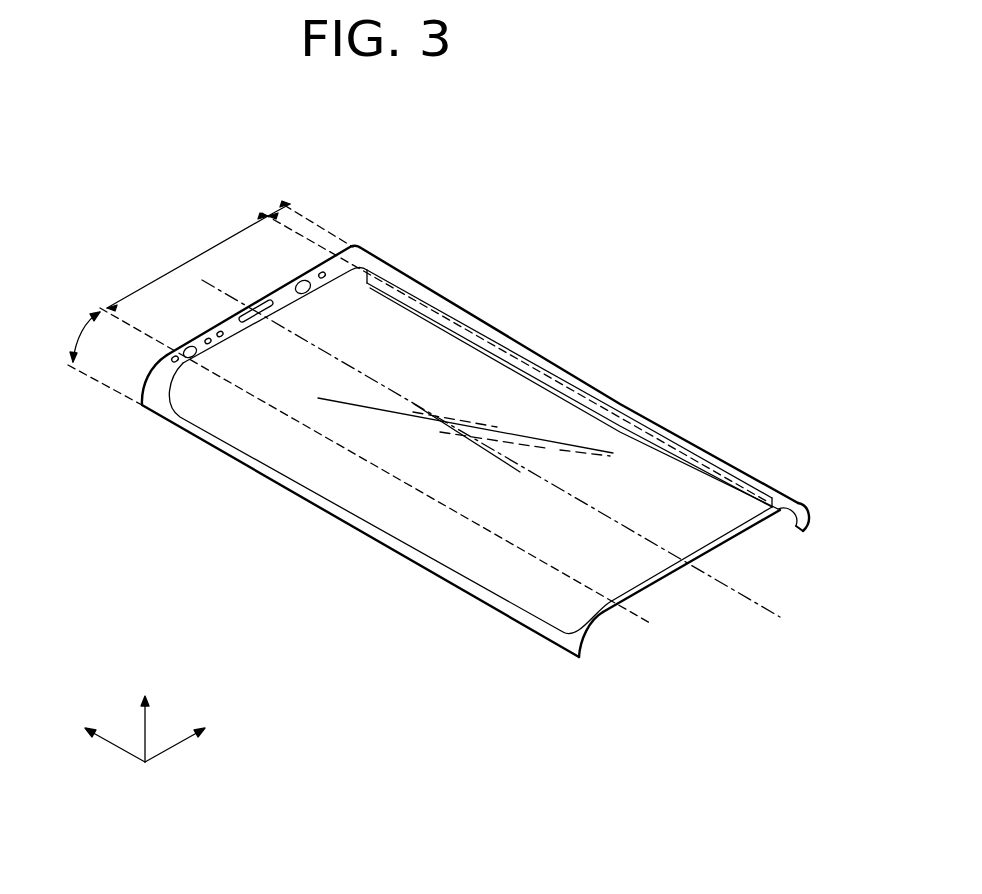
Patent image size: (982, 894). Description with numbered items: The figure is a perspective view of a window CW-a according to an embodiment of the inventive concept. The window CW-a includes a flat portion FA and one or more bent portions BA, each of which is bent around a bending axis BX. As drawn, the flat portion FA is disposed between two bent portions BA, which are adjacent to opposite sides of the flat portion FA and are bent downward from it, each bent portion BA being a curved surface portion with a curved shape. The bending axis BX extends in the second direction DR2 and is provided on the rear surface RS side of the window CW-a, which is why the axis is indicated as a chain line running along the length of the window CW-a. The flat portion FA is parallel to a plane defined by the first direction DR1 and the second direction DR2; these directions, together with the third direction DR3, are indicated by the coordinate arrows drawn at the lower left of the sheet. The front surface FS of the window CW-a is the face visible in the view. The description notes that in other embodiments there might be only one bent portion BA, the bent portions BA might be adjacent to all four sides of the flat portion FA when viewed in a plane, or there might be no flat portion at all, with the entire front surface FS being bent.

The window CW-a is at (598, 306).
The front surface FS is at (660, 468).
The bent portion BA is at (410, 400).
The flat portion FA is at (187, 262).
The bending axis BX is at (770, 609).
The rear surface RS is at (596, 628).
The first direction DR1 is at (188, 729).
The second direction DR2 is at (100, 729).
The third direction DR3 is at (144, 713).